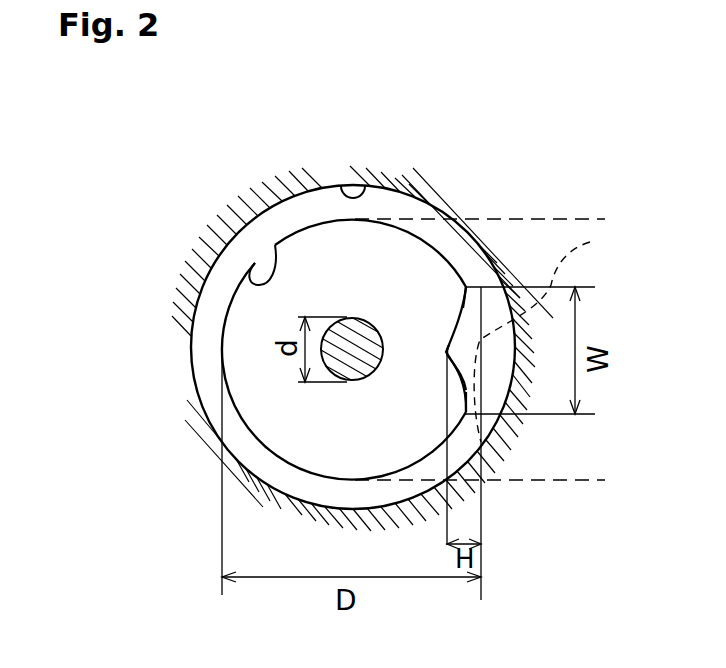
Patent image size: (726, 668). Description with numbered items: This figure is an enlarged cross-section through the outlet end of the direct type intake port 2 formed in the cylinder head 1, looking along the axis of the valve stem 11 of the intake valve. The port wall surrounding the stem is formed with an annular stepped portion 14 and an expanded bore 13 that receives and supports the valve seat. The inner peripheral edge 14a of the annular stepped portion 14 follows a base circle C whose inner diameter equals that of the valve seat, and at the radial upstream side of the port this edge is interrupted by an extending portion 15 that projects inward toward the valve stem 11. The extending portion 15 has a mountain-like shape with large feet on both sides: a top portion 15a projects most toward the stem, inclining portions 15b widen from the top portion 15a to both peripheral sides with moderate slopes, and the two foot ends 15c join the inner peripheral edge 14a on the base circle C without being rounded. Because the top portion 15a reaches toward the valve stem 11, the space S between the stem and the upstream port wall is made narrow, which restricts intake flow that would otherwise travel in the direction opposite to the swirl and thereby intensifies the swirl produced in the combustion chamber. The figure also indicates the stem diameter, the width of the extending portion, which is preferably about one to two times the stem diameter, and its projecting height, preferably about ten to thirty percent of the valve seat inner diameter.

The cylinder head 1 is at (208, 457).
The direct type intake port 2 is at (262, 383).
The valve stem 11 is at (337, 335).
The expanded bore 13 is at (344, 186).
The annular stepped portion 14 is at (212, 293).
The inner peripheral edge 14a is at (275, 245).
The extending portion 15 is at (453, 337).
The top portion 15a is at (447, 352).
The inclining portions 15b is at (465, 385).
The foot ends 15c is at (463, 287).
The space S is at (403, 352).
The base circle C is at (538, 337).